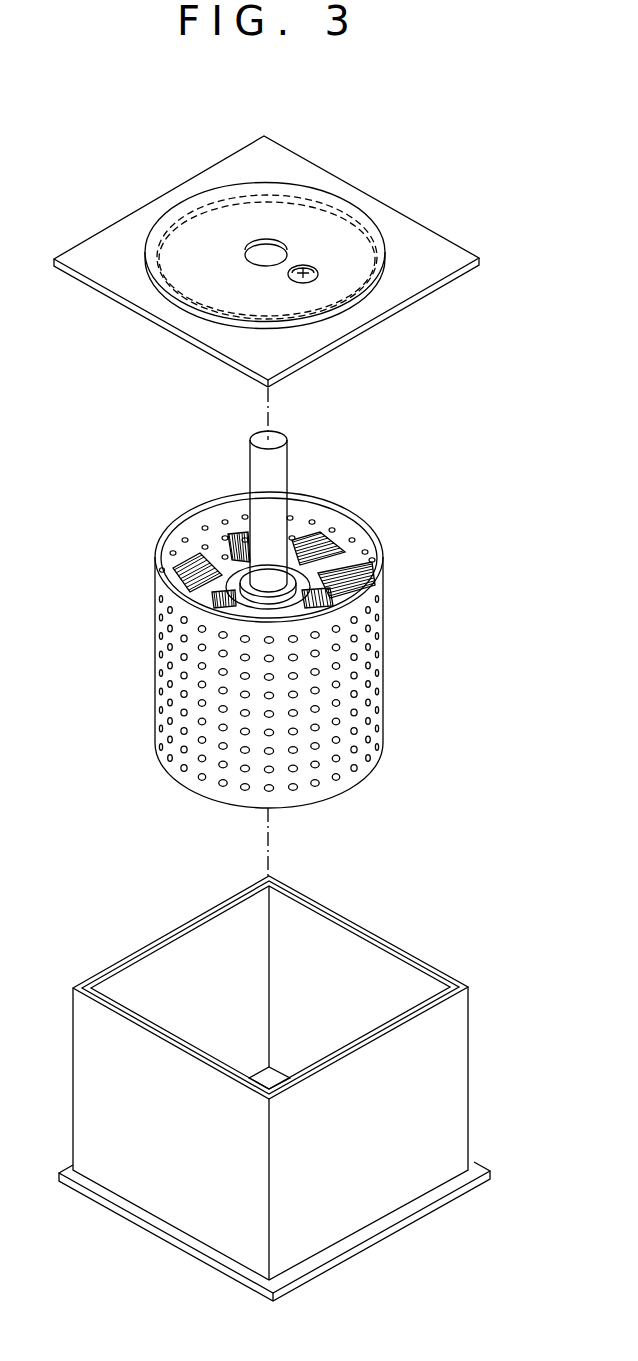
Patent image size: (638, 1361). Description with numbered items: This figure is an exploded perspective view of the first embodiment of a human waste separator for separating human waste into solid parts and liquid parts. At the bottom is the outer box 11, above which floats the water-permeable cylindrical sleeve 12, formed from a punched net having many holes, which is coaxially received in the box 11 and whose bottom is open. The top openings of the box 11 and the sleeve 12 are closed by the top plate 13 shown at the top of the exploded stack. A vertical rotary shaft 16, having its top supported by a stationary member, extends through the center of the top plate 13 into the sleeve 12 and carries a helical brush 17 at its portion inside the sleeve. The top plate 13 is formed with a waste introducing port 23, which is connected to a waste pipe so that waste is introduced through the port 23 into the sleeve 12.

The outer box 11 is at (142, 945).
The water-permeable cylindrical sleeve 12 is at (155, 707).
The top plate 13 is at (152, 324).
The vertical rotary shaft 16 is at (260, 470).
The helical brush 17 is at (320, 543).
The waste introducing port 23 is at (305, 272).